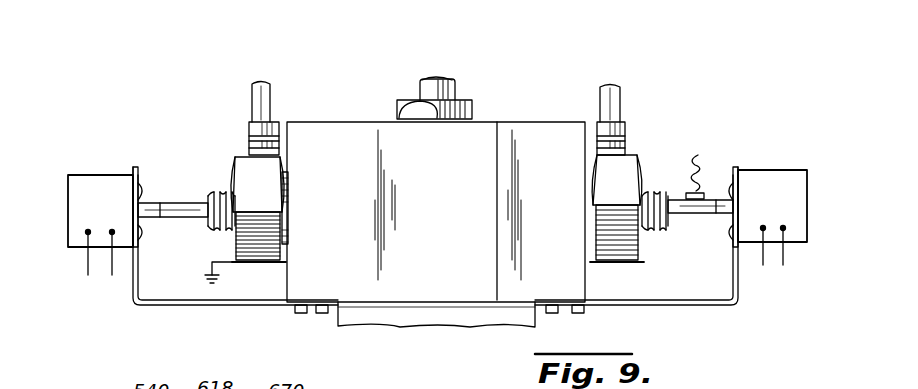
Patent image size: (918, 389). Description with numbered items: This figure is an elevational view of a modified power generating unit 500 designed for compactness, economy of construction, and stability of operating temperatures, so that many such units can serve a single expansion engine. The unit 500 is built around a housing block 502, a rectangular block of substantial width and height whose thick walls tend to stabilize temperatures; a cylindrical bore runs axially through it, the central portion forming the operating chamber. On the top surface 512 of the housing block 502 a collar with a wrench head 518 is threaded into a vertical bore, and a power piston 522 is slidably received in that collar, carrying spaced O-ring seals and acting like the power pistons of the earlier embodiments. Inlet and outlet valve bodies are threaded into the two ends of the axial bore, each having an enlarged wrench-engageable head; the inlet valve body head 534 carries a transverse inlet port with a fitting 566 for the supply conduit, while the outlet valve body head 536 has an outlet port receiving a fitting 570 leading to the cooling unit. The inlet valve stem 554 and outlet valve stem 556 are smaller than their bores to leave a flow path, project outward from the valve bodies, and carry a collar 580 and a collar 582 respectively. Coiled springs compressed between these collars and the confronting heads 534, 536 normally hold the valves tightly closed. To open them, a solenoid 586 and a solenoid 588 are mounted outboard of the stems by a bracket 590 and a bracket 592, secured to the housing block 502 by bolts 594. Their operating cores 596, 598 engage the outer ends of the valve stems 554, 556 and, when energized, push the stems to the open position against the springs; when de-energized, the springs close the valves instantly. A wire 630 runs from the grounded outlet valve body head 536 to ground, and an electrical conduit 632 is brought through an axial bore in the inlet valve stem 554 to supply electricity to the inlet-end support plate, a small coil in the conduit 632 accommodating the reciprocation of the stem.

The power generating unit 500 is at (525, 112).
The housing block 502 is at (361, 136).
The top surface 512 is at (497, 120).
The wrench head 518 is at (408, 100).
The power piston 522 is at (438, 80).
The inlet valve body head 534 is at (600, 258).
The outlet valve body head 536 is at (288, 222).
The inlet valve stem 554 is at (684, 214).
The outlet valve stem 556 is at (170, 218).
The fitting 566 is at (625, 128).
The fitting 570 is at (249, 135).
The collar 580 is at (658, 185).
The collar 582 is at (226, 192).
The solenoid 586 is at (798, 178).
The solenoid 588 is at (76, 188).
The bracket 590 is at (733, 306).
The bracket 592 is at (153, 306).
The bolts 594 is at (322, 314).
The operating core 596 is at (725, 185).
The operating core 598 is at (150, 187).
The wire 630 is at (232, 264).
The electrical conduit 632 is at (698, 152).